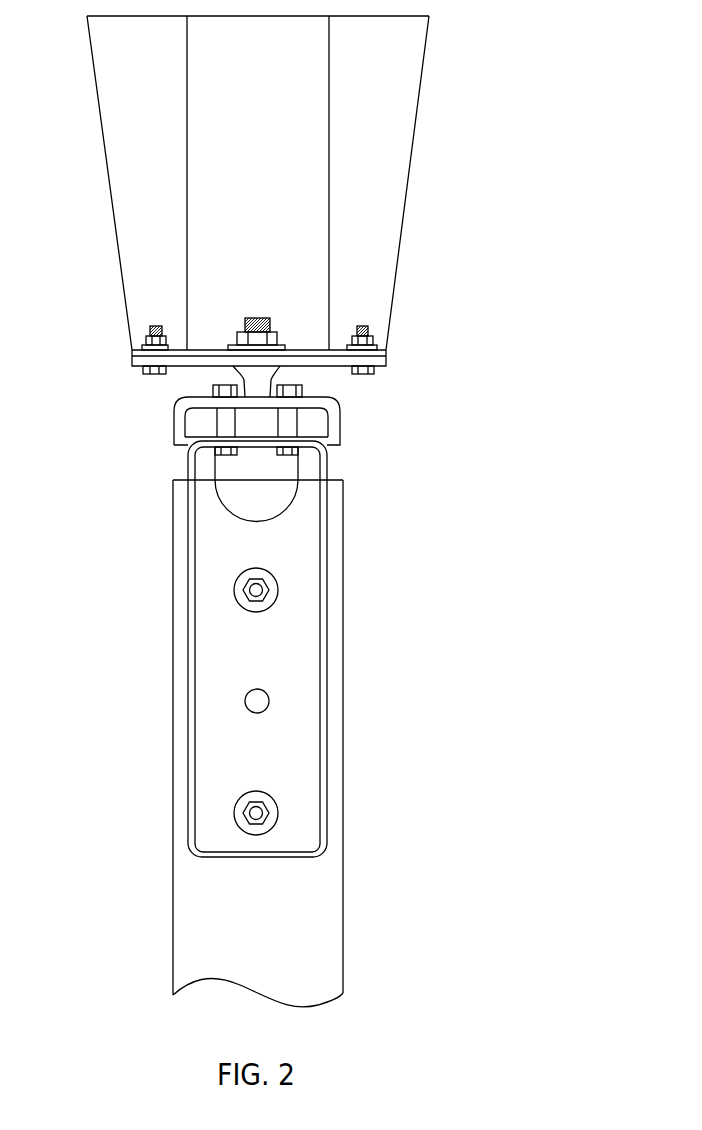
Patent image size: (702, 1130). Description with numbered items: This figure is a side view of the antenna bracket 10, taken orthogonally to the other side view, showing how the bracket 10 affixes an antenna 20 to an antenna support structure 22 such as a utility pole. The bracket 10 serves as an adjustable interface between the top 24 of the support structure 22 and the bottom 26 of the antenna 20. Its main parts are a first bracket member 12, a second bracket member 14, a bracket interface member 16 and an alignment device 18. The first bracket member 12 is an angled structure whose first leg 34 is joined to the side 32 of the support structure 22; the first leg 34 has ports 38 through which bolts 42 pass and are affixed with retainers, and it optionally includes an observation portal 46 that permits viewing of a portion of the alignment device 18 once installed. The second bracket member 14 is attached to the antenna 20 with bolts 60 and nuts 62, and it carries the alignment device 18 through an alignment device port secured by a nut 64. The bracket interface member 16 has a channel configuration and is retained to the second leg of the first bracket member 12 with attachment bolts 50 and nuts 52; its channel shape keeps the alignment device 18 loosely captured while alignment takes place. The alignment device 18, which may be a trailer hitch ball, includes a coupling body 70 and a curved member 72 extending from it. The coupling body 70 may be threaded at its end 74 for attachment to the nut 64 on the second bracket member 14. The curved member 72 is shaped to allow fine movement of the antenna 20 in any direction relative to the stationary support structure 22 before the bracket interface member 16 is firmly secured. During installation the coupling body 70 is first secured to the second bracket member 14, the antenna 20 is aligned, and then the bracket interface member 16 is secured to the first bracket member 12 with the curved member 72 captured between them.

The antenna bracket 10 is at (505, 376).
The first bracket member 12 is at (298, 649).
The second bracket member 14 is at (388, 359).
The bracket interface member 16 is at (178, 434).
The alignment device 18 is at (262, 383).
The antenna 20 is at (98, 99).
The antenna support structure 22 is at (322, 932).
The top 24 is at (345, 482).
The bottom 26 is at (308, 350).
The side 32 is at (330, 767).
The first leg 34 is at (308, 727).
The ports 38 is at (266, 690).
The bolts 42 is at (261, 590).
The observation portal 46 is at (270, 508).
The bolts 50 is at (288, 425).
The nuts 52 is at (213, 389).
The bolts 60 is at (142, 369).
The nuts 62 is at (142, 344).
The nut 64 is at (278, 333).
The coupling body 70 is at (258, 372).
The curved member 72 is at (273, 445).
The end 74 is at (268, 318).